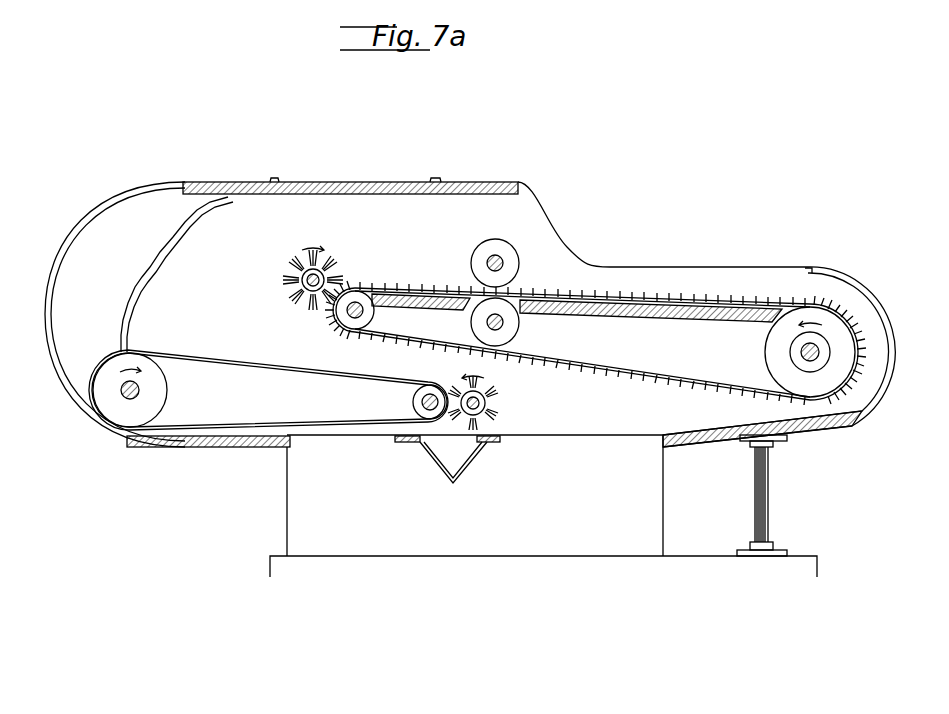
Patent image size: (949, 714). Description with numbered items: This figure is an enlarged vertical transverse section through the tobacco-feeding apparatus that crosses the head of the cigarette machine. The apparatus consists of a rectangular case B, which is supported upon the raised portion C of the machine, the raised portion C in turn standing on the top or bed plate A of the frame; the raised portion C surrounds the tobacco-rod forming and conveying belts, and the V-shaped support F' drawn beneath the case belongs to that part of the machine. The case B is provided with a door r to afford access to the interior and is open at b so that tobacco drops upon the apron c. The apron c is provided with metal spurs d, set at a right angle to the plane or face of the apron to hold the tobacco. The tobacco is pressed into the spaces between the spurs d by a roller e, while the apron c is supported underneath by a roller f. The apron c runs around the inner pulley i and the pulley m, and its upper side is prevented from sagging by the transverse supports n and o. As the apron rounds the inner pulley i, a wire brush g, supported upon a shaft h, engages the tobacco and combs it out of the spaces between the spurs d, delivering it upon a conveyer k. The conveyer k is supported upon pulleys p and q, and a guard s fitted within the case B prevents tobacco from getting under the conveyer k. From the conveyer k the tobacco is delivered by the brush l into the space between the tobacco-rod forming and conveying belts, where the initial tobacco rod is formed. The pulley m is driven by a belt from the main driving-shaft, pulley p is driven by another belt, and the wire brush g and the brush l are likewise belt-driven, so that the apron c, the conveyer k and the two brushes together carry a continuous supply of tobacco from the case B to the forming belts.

The top or bed plate A is at (543, 572).
The rectangular case B is at (451, 314).
The raised portion C is at (475, 495).
The V-shaped support F' is at (447, 464).
The opening of case b is at (595, 318).
The apron c is at (712, 300).
The metal spurs d is at (604, 294).
The roller e is at (514, 248).
The roller f is at (519, 333).
The wire brush g is at (300, 276).
The shaft h is at (297, 302).
The inner pulley i is at (355, 330).
The conveyer k is at (284, 368).
The brush l is at (493, 397).
The pulley m is at (840, 347).
The transverse support n is at (421, 315).
The transverse support o is at (670, 312).
The pulley p is at (153, 393).
The pulley q is at (415, 400).
The door r is at (350, 175).
The guard s is at (155, 262).